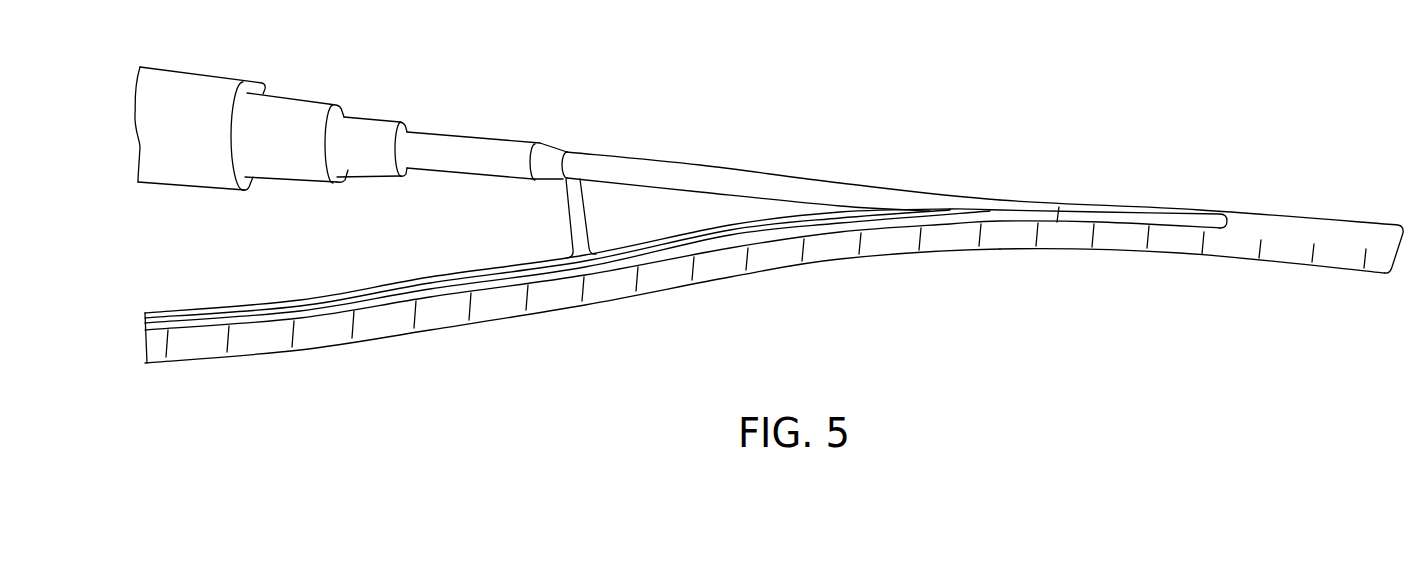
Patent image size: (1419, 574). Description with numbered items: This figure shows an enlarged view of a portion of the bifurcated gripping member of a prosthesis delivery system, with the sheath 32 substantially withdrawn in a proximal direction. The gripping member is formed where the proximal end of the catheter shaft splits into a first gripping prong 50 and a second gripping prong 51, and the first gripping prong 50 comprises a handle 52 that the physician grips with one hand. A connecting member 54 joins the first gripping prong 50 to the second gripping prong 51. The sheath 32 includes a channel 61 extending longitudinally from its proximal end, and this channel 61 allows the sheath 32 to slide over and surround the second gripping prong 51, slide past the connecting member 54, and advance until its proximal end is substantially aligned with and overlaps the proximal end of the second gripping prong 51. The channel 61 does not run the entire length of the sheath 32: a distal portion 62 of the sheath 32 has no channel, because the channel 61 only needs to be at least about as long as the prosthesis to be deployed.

The sheath 32 is at (682, 304).
The first gripping prong 50 is at (740, 167).
The second gripping prong 51 is at (835, 247).
The handle 52 is at (198, 100).
The connecting member 54 is at (568, 213).
The channel 61 is at (660, 248).
The distal portion 62 is at (1288, 237).